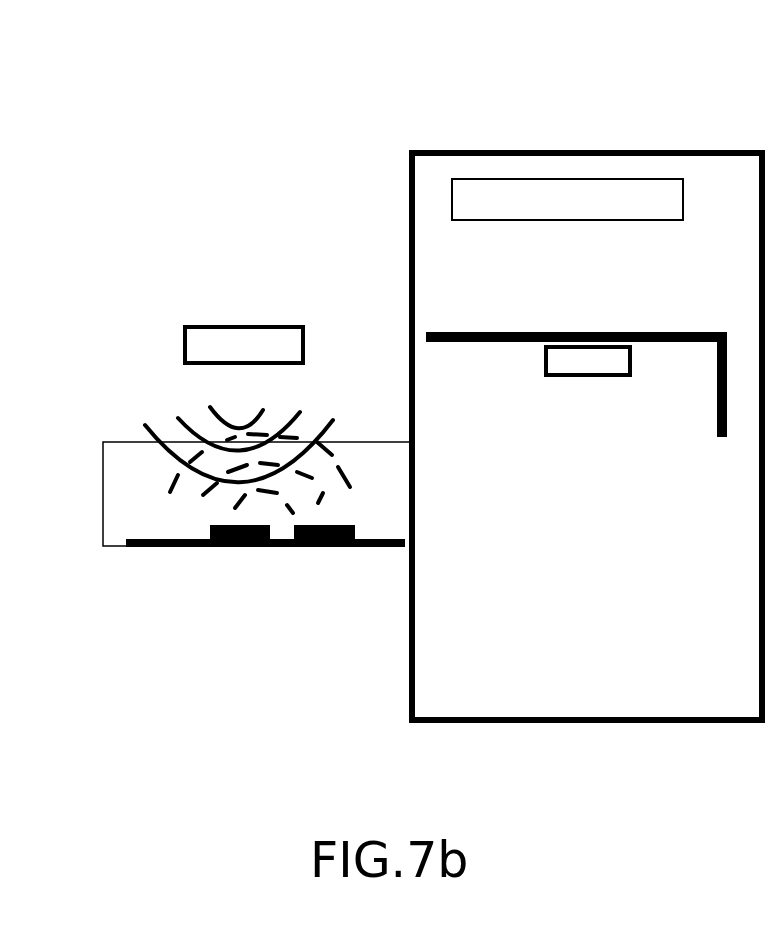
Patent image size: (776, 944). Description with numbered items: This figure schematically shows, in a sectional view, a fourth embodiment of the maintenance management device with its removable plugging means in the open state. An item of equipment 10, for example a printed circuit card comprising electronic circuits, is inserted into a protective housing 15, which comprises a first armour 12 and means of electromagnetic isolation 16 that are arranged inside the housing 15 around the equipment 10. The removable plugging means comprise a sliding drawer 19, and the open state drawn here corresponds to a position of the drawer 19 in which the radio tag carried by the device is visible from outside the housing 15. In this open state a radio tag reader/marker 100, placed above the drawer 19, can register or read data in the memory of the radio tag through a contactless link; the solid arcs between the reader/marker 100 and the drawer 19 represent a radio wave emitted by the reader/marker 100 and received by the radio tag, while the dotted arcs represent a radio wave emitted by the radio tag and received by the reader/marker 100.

The protective housing 15 is at (618, 151).
The item of equipment 10 is at (500, 195).
The means of electromagnetic isolation 16 is at (450, 331).
The first armour 12 is at (582, 362).
The radio tag reader/marker 100 is at (220, 338).
The sliding drawer 19 is at (103, 546).